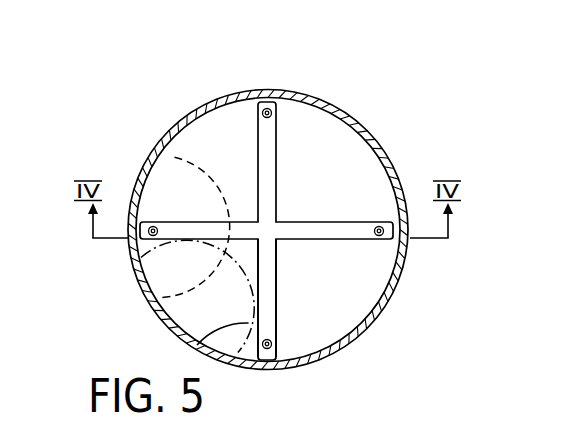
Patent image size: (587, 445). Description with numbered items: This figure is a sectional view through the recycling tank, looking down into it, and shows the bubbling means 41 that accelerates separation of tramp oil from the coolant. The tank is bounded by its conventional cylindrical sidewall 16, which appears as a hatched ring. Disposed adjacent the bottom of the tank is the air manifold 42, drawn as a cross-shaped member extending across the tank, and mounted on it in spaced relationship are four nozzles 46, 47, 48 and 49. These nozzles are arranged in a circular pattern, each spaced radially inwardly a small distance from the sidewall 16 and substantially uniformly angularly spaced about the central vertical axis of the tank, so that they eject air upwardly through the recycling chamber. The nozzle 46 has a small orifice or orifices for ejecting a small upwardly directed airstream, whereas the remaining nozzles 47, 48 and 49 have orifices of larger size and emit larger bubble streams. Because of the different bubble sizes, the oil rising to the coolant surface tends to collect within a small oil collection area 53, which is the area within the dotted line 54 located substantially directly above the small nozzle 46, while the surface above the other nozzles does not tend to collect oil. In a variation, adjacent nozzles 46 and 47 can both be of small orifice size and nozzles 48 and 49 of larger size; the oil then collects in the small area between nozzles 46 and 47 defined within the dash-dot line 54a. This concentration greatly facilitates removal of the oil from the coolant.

The cylindrical sidewall 16 is at (368, 131).
The bubbling means 41 is at (284, 145).
The air manifold 42 is at (268, 285).
The nozzle 46 is at (150, 233).
The nozzle 47 is at (270, 349).
The nozzle 48 is at (382, 234).
The nozzle 49 is at (262, 108).
The oil collection area 53 is at (162, 273).
The dotted line 54 is at (175, 160).
The dash-dot line 54a is at (200, 344).